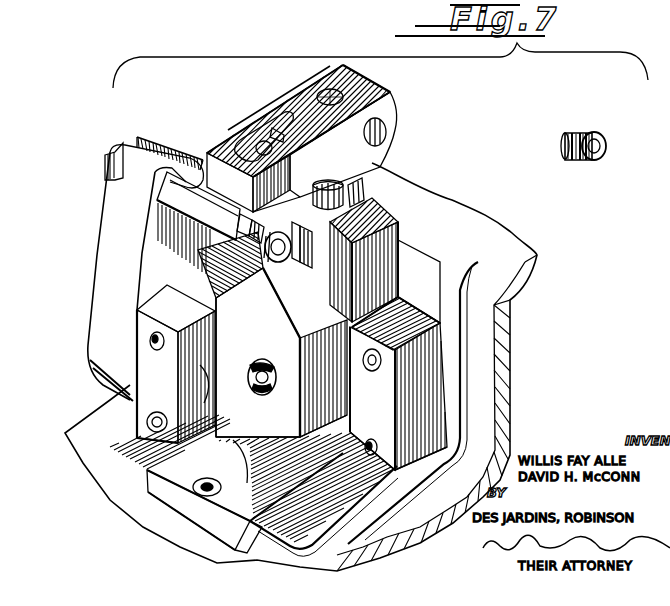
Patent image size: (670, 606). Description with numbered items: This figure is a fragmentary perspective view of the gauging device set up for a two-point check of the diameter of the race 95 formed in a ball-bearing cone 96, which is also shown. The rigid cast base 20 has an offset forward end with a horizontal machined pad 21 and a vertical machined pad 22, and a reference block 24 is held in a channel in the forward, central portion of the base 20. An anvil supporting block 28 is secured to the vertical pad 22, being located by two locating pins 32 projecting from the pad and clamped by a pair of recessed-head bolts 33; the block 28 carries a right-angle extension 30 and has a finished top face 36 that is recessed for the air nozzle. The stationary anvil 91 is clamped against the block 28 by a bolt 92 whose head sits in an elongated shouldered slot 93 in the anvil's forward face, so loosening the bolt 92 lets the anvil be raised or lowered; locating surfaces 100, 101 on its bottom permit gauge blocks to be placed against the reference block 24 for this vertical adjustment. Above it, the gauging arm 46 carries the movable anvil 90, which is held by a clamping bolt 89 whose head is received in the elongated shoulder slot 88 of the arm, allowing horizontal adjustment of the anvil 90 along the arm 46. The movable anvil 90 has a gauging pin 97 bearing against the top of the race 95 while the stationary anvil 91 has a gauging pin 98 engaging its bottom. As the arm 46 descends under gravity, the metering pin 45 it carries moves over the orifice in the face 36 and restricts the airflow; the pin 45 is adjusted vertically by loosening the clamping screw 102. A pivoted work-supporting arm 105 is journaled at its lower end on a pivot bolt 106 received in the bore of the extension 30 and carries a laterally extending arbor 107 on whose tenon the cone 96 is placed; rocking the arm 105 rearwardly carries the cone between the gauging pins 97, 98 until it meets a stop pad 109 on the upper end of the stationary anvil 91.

The base 20 is at (502, 348).
The horizontal machined pad 21 is at (254, 485).
The vertical machined pad 22 is at (421, 281).
The reference block 24 is at (245, 503).
The anvil supporting block 28 is at (404, 314).
The right-angle extension 30 is at (165, 303).
The locating pins 32 is at (160, 350).
The recessed-head bolts 33 is at (147, 421).
The finished face 36 is at (377, 208).
The metering pin 45 is at (358, 192).
The gauging arm 46 is at (385, 101).
The shoulder slot 88 is at (270, 130).
The clamping bolt 89 is at (252, 140).
The movable anvil 90 is at (308, 190).
The stationary anvil 91 is at (272, 334).
The bolt 92 is at (262, 358).
The shouldered slot 93 is at (268, 396).
The race 95 is at (572, 132).
The cone 96 is at (283, 263).
The gauging pin 97 is at (252, 198).
The gauging pin 98 is at (263, 267).
The locating surface 100 is at (243, 441).
The locating surface 101 is at (236, 488).
The clamping screw 102 is at (388, 131).
The work-supporting arm 105 is at (110, 238).
The pivot bolt 106 is at (204, 386).
The arbor 107 is at (203, 233).
The stop pad 109 is at (300, 245).